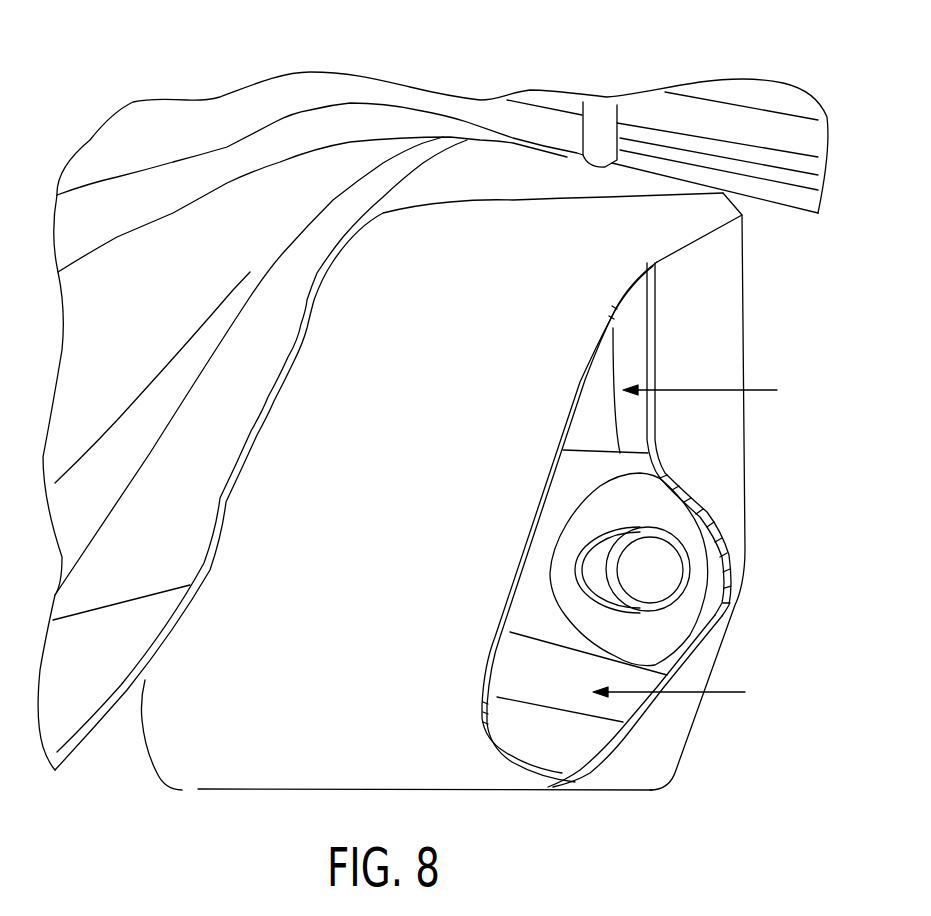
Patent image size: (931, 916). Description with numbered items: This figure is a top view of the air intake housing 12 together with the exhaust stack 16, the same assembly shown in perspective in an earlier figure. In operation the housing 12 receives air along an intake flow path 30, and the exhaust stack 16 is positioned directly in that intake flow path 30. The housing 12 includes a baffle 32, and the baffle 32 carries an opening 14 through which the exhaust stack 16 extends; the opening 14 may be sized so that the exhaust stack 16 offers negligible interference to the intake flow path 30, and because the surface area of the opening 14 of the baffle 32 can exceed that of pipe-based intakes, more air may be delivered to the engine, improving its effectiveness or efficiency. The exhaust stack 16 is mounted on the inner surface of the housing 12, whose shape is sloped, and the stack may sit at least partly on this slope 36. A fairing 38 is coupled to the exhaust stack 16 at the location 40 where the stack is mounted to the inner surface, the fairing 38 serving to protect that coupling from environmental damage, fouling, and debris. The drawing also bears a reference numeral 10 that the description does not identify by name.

The cover 10 is at (192, 247).
The air intake housing 12 is at (283, 742).
The opening 14 is at (637, 321).
The exhaust stack 16 is at (657, 577).
The intake flow path 30 is at (707, 392).
The baffle 32 is at (483, 654).
The slope 36 is at (540, 703).
The fairing 38 is at (685, 537).
The location 40 is at (653, 478).